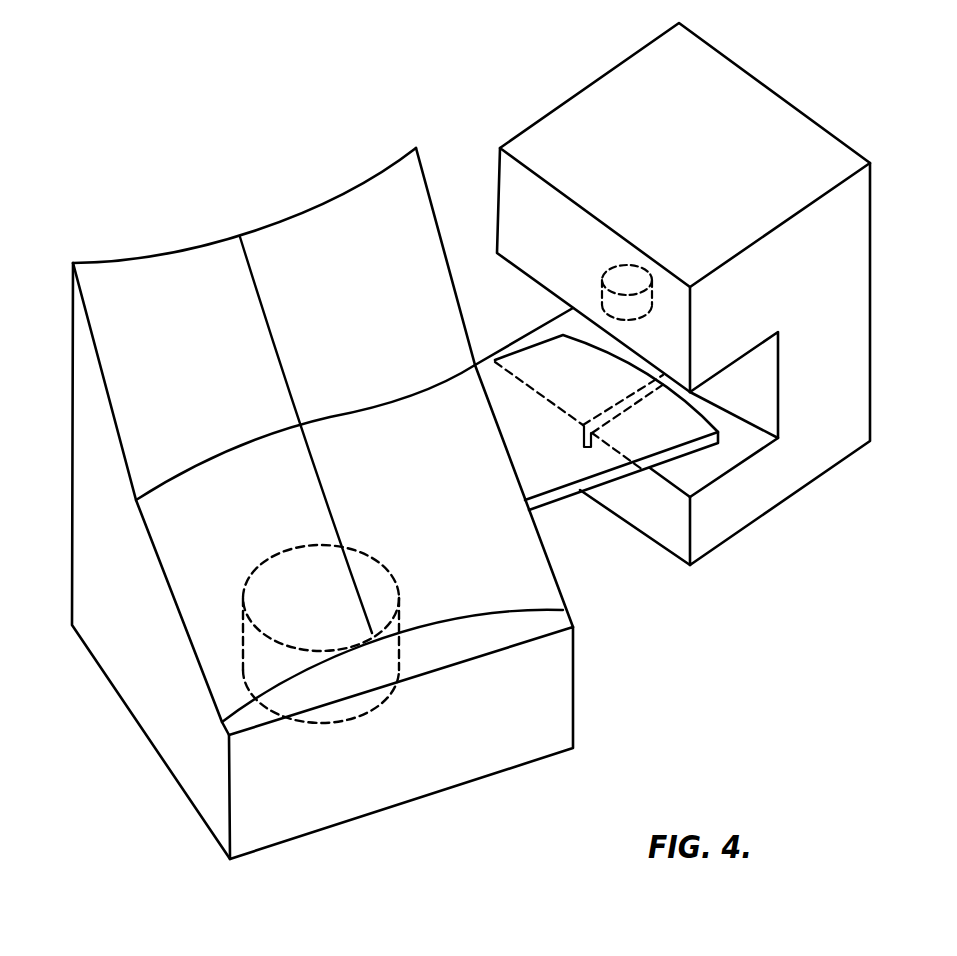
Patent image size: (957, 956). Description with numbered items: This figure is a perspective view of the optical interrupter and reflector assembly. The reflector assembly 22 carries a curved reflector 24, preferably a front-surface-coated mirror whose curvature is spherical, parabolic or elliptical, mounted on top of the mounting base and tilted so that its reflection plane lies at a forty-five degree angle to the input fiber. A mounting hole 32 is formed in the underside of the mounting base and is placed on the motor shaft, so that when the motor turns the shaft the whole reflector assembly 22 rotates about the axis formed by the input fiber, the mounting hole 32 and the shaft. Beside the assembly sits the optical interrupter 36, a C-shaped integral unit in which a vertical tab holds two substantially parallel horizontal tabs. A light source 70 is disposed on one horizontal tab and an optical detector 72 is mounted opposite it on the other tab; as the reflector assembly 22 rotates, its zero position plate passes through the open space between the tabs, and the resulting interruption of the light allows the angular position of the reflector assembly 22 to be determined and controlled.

The reflector assembly 22 is at (159, 214).
The curved reflector 24 is at (254, 268).
The mounting hole 32 is at (329, 723).
The optical interrupter 36 is at (551, 468).
The light source 70 is at (636, 262).
The optical detector 72 is at (606, 410).